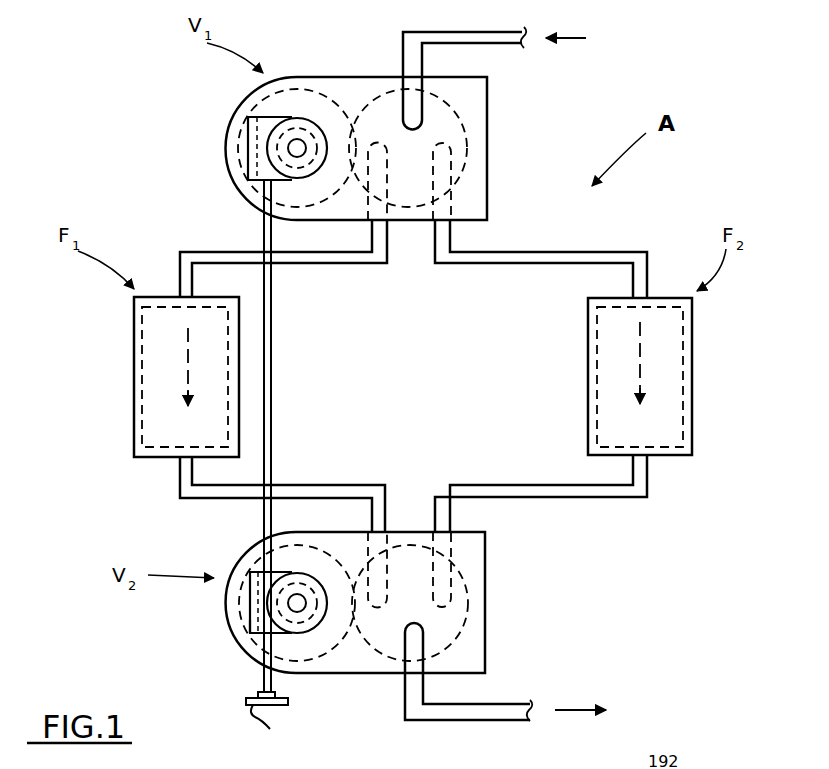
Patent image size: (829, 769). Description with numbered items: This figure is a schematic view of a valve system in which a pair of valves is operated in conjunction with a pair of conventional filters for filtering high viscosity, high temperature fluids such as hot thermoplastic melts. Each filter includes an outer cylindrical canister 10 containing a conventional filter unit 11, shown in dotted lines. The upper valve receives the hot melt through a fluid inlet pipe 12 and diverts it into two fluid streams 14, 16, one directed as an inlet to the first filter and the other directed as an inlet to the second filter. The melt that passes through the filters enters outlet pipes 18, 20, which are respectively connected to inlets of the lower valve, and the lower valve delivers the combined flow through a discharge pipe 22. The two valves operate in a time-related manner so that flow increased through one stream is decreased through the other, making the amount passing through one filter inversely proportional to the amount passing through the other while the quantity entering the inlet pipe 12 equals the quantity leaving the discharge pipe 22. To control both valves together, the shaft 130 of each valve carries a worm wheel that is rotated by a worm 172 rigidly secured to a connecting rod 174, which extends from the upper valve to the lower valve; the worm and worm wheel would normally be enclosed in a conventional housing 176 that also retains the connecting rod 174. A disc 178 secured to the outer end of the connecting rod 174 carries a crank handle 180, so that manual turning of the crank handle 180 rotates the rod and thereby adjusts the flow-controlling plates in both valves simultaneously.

The outer cylindrical canister 10 is at (137, 310).
The filter unit 11 is at (157, 363).
The fluid inlet pipe 12 is at (503, 44).
The fluid stream pipe 14 is at (216, 250).
The fluid stream pipe 16 is at (556, 252).
The outlet pipe 18 is at (220, 495).
The outlet pipe 20 is at (567, 495).
The discharge pipe 22 is at (503, 708).
The shaft 130 is at (296, 148).
The worm 172 is at (250, 134).
The connecting rod 174 is at (263, 321).
The housing 176 is at (251, 625).
The disc 178 is at (276, 705).
The crank handle 180 is at (272, 733).